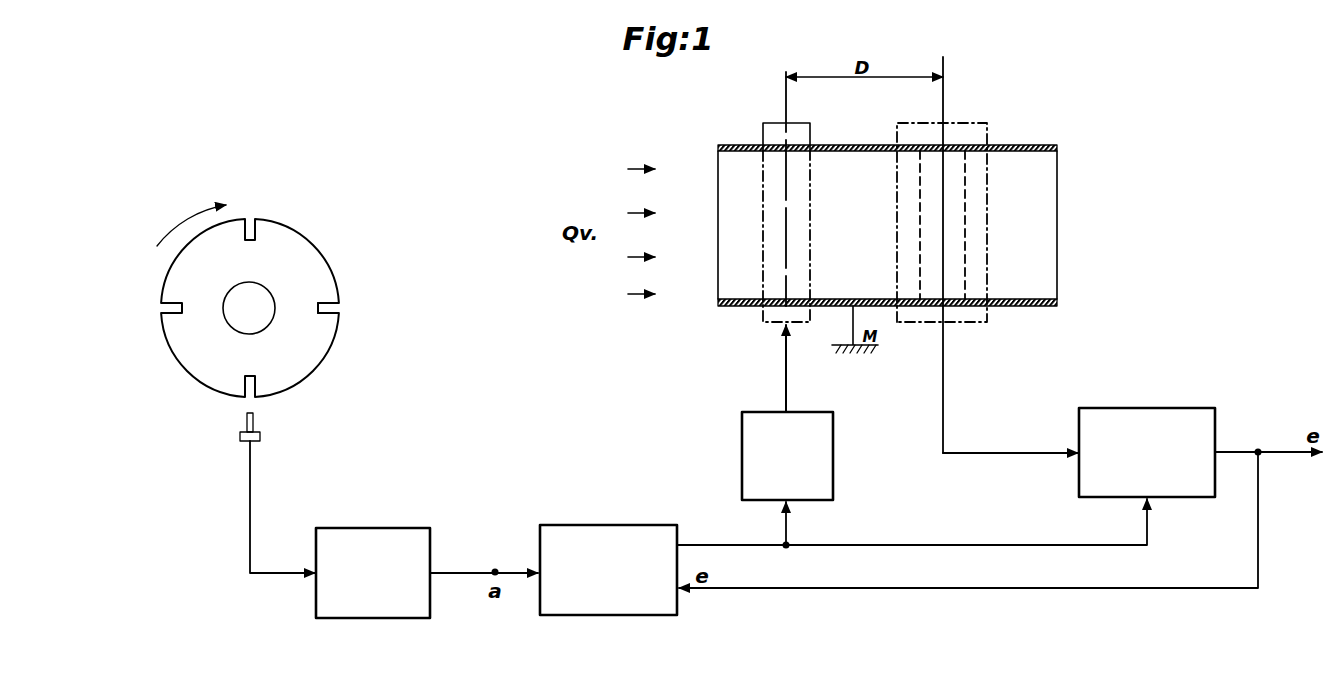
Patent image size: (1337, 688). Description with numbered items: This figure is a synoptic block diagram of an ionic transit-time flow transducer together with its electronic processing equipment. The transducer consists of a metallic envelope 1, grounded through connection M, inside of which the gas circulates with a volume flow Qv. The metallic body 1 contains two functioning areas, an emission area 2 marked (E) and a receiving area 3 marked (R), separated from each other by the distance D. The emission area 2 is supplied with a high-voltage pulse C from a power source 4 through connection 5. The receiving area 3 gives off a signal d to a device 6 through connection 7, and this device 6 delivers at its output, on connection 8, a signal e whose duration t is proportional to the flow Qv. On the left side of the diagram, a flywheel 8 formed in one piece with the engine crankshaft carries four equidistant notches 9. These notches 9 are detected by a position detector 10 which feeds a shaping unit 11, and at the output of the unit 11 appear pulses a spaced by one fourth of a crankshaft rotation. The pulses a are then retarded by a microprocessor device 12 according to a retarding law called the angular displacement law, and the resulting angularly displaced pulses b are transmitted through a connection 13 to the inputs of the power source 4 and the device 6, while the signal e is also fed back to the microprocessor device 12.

The metallic envelope 1 is at (1035, 143).
The emission area 2 is at (762, 311).
The receiving area 3 is at (975, 325).
The power source 4 is at (836, 453).
The connection 5 is at (782, 372).
The device 6 is at (1160, 407).
The connection 7 is at (947, 407).
The flywheel 8 is at (316, 268).
The notches 9 is at (339, 306).
The position detector 10 is at (262, 437).
The shaping unit 11 is at (382, 527).
The microprocessor device 12 is at (607, 524).
The connection 13 is at (756, 546).